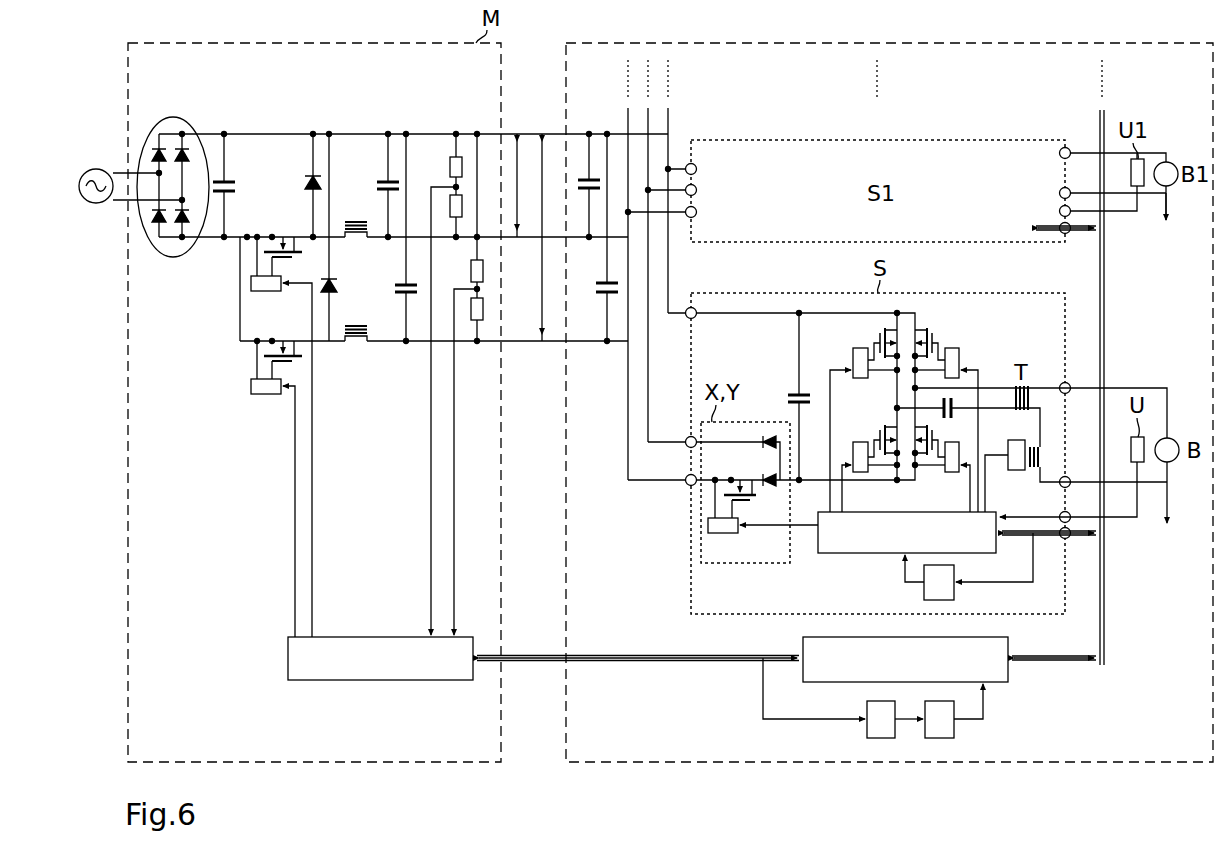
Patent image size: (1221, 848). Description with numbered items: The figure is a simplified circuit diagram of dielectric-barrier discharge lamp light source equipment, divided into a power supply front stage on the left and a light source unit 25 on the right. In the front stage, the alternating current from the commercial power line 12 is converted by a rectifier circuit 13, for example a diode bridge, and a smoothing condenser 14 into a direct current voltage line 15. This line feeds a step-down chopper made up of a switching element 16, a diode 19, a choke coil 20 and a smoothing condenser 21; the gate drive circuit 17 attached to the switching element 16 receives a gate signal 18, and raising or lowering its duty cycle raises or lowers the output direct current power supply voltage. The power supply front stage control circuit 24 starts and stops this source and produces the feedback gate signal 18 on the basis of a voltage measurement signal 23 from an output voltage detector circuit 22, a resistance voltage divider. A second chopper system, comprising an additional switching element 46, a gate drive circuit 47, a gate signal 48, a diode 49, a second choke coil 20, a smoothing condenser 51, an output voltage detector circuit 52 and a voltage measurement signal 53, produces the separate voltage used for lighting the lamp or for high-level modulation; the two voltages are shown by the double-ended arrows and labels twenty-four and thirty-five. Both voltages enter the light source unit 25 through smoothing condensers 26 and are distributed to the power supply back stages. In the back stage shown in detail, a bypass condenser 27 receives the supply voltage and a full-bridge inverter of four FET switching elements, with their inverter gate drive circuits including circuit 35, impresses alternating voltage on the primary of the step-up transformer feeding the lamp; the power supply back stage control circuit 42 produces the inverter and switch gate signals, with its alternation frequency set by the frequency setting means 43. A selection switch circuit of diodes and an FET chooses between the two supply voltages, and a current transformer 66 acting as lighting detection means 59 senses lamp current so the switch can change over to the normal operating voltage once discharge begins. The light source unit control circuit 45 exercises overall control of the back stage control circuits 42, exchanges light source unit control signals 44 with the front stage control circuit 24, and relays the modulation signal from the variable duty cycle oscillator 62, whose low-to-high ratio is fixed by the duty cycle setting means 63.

The commercial power line 12 is at (130, 202).
The rectifier circuit 13 is at (182, 120).
The smoothing condenser 14 is at (233, 186).
The direct current voltage line 15 is at (247, 237).
The switching element 16 is at (279, 243).
The gate drive circuit 17 is at (266, 296).
The gate signal 18 is at (310, 460).
The diode 19 is at (302, 186).
The choke coil 20 is at (357, 296).
The smoothing condenser 21 is at (379, 186).
The output voltage detector circuit 22 is at (453, 182).
The voltage measurement signal 23 is at (430, 411).
The power supply front stage control circuit 24 is at (368, 671).
The light source unit 25 is at (598, 43).
The smoothing condenser 26 is at (591, 238).
The bypass condenser 27 is at (791, 396).
The inverter gate drive circuit 35 is at (533, 237).
The power supply back stage control circuit 42 is at (896, 545).
The frequency setting means 43 is at (928, 593).
The light source unit control signal 44 is at (638, 645).
The light source unit control circuit 45 is at (896, 671).
The additional switching element 46 is at (279, 346).
The gate drive circuit 47 is at (266, 399).
The gate signal 48 is at (282, 511).
The diode 49 is at (342, 237).
The smoothing condenser 51 is at (398, 238).
The output voltage detector circuit 52 is at (474, 284).
The voltage measurement signal 53 is at (467, 462).
The lighting detection means 59 is at (1008, 448).
The variable duty cycle oscillator 62 is at (928, 731).
The duty cycle setting means 63 is at (870, 731).
The current transformer 66 is at (1036, 468).